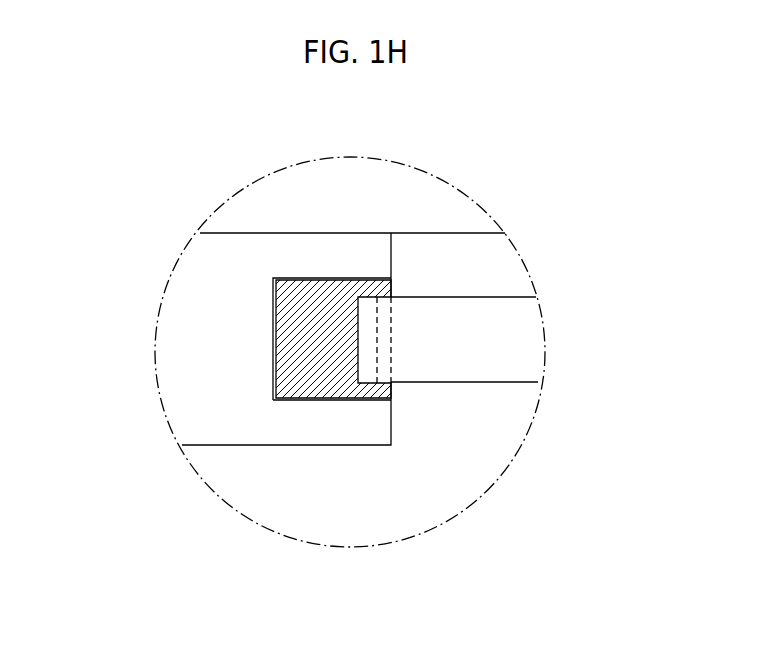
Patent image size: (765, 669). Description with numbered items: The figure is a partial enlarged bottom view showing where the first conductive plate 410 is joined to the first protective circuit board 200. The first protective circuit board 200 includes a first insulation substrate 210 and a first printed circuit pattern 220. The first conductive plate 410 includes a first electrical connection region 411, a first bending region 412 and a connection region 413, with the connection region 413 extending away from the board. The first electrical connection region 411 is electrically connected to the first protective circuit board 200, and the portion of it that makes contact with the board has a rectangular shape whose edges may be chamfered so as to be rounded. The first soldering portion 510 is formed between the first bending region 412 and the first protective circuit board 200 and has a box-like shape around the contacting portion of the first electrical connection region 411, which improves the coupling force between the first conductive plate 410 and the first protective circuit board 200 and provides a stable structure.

The first protective circuit board 200 is at (283, 472).
The first insulation substrate 210 is at (343, 432).
The first printed circuit pattern 220 is at (270, 338).
The first conductive plate 410 is at (501, 406).
The first electrical connection region 411 is at (317, 310).
The first bending region 412 is at (377, 349).
The connection region 413 is at (522, 340).
The first soldering portion 510 is at (286, 404).